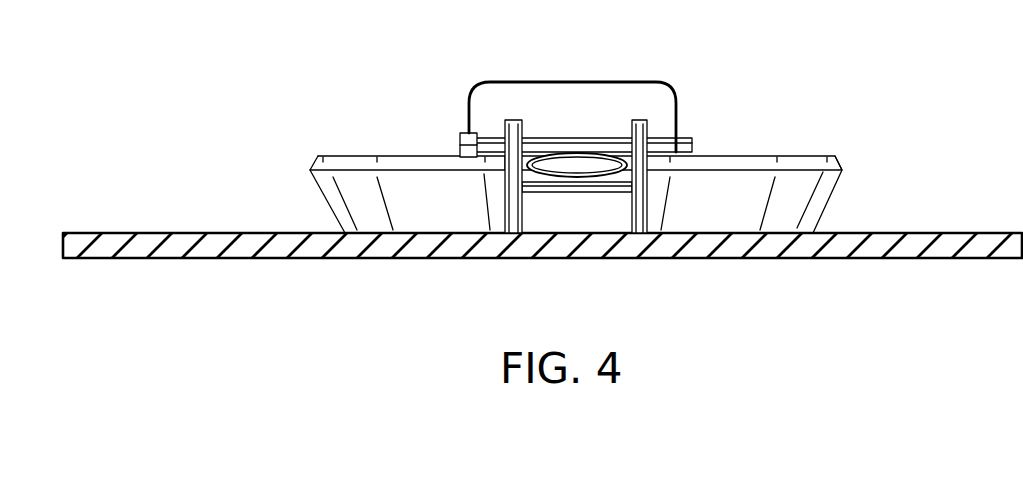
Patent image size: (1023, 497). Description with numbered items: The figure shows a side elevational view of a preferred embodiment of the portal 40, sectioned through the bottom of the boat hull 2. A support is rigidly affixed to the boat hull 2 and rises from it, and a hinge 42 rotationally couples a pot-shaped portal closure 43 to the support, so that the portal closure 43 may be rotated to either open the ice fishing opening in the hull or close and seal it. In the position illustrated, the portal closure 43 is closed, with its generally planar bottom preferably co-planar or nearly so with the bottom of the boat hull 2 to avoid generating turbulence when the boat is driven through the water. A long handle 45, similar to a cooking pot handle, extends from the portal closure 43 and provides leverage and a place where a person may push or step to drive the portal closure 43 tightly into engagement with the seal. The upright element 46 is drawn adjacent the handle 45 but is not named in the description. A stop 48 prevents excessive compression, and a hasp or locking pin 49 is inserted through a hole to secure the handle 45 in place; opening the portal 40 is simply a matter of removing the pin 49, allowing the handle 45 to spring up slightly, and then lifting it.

The boat hull 2 is at (139, 229).
The portal 40 is at (608, 139).
The hinge 42 is at (800, 165).
The portal closure 43 is at (820, 195).
The handle 45 is at (576, 165).
The upright post 46 is at (645, 193).
The stop 48 is at (574, 192).
The locking pin 49 is at (462, 138).